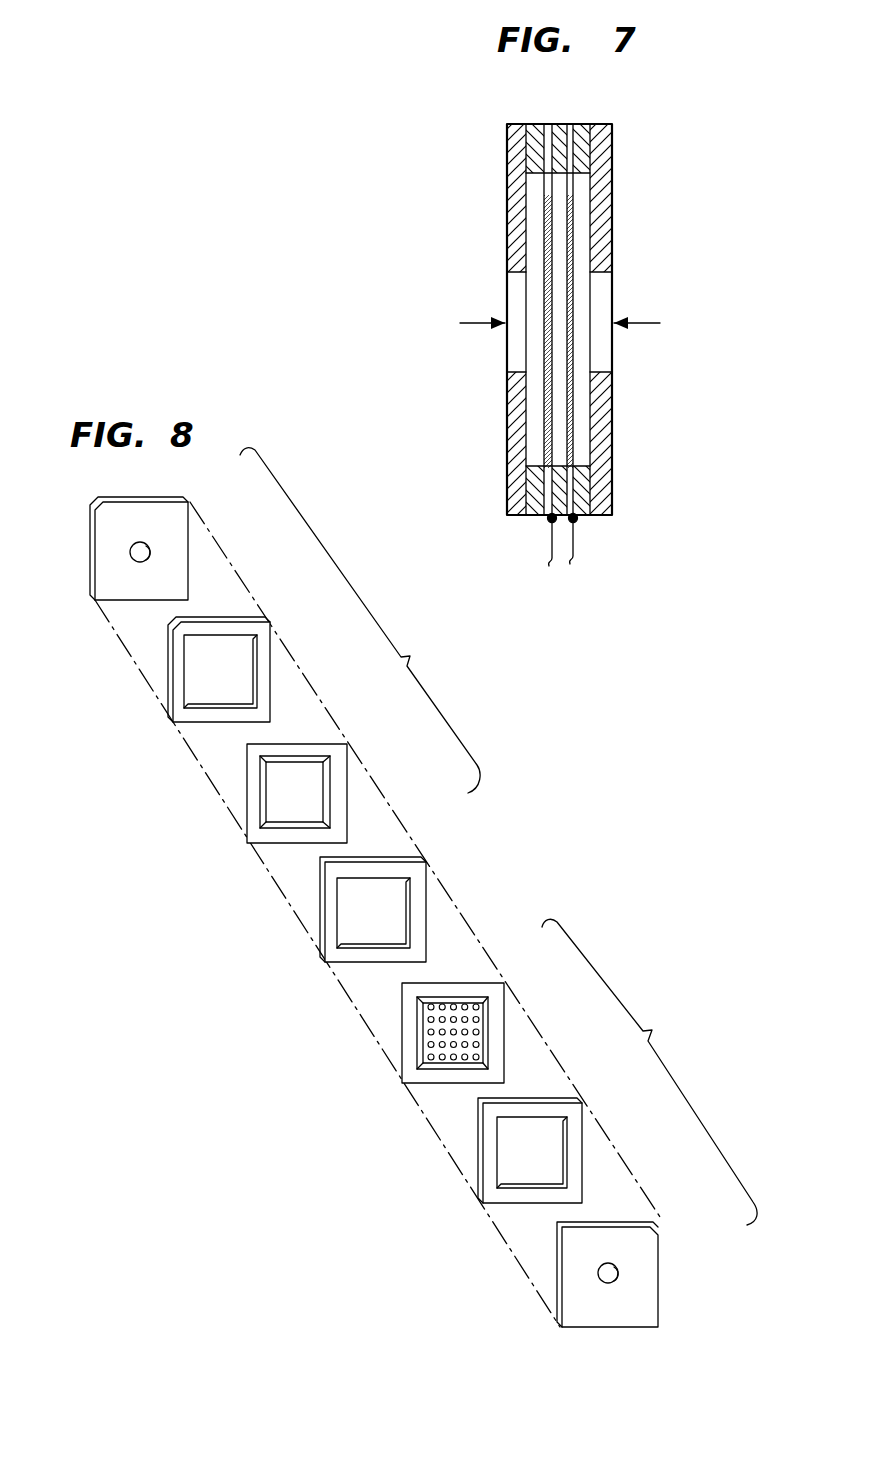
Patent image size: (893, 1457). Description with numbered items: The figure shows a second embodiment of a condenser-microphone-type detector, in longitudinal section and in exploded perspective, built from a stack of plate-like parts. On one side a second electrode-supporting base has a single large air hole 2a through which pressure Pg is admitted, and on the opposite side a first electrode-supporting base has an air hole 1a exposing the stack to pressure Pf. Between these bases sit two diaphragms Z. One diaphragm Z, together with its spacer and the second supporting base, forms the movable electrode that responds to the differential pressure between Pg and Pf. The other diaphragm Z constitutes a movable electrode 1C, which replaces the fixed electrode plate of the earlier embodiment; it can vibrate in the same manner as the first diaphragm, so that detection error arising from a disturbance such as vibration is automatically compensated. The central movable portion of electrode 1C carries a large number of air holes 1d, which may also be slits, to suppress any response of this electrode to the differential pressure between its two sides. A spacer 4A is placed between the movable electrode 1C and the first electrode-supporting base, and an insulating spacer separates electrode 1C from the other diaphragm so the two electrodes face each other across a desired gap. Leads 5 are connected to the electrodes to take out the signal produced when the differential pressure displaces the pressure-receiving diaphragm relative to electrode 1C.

In FIG. 7, the air hole 2a is at (517, 303).
In FIG. 8, the air hole 2a is at (137, 553).
In FIG. 7, the air hole 1a is at (604, 302).
In FIG. 8, the air hole 1a is at (605, 1274).
In FIG. 7, the spacer 4A is at (581, 123).
In FIG. 8, the spacer 4A is at (587, 1163).
In FIG. 7, the diaphragm Z is at (545, 397).
In FIG. 7, the movable electrode 1C is at (578, 420).
In FIG. 8, the movable electrode 1C is at (456, 1033).
In FIG. 7, the air holes 1d is at (572, 340).
In FIG. 8, the air holes 1d is at (428, 1020).
In FIG. 7, the leads 5 is at (556, 545).
In FIG. 7, the pressure Pg is at (457, 326).
In FIG. 7, the pressure Pf is at (667, 326).